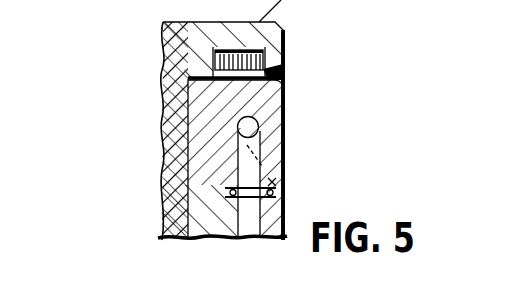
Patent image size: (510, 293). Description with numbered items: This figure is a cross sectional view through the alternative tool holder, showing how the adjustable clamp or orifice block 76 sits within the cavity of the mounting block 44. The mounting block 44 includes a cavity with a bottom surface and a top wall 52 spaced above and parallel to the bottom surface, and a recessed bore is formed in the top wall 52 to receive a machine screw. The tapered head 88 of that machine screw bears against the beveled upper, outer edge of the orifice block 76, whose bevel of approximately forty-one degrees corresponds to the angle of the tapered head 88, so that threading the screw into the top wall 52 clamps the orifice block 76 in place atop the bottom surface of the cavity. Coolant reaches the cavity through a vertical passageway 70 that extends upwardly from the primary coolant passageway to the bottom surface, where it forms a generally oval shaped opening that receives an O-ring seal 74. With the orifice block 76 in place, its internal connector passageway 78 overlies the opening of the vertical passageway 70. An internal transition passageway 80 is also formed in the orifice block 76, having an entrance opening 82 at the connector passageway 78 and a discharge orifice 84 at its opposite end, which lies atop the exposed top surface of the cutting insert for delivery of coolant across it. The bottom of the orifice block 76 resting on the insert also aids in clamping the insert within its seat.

The mounting block 44 is at (163, 74).
The top wall 52 is at (186, 100).
The vertical passageway 70 is at (183, 222).
The O-ring seal 74 is at (236, 191).
The orifice block 76 is at (287, 135).
The connector passageway 78 is at (246, 160).
The transition passageway 80 is at (295, 162).
The entrance opening 82 is at (283, 105).
The discharge orifice 84 is at (295, 180).
The tapered head 88 is at (283, 51).